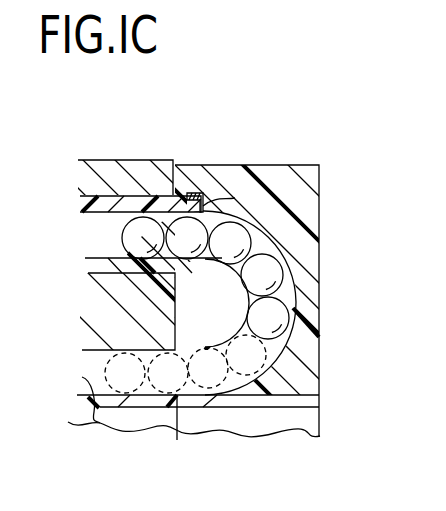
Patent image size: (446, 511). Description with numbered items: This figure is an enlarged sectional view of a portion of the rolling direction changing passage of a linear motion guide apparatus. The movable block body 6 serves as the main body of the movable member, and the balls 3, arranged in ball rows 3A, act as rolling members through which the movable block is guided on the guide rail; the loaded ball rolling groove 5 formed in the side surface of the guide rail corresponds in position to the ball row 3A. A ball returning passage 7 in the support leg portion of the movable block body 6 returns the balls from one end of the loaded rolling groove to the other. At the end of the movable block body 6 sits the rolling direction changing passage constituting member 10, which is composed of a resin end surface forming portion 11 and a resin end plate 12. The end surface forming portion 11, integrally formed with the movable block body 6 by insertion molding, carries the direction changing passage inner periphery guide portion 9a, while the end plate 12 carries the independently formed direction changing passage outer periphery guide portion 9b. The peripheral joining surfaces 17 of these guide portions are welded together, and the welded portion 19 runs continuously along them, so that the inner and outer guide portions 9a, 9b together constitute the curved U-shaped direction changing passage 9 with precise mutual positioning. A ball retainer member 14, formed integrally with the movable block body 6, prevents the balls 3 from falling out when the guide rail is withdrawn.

The balls 3 is at (250, 236).
The ball rows 3A is at (157, 410).
The loaded ball rolling grooves 5 is at (82, 377).
The movable block body 6 is at (142, 165).
The ball returning passages 7 is at (82, 214).
The direction changing passage 9 is at (290, 286).
The direction changing passage inner periphery guide portion 9a is at (217, 394).
The direction changing passage outer periphery guide portion 9b is at (258, 410).
The rolling direction changing passage constituting member 10 is at (293, 107).
The end surface forming portion 11 is at (200, 193).
The end plate 12 is at (274, 176).
The ball retainer members 14 is at (68, 422).
The joining surfaces 17 is at (300, 336).
The welded portion 19 is at (210, 203).